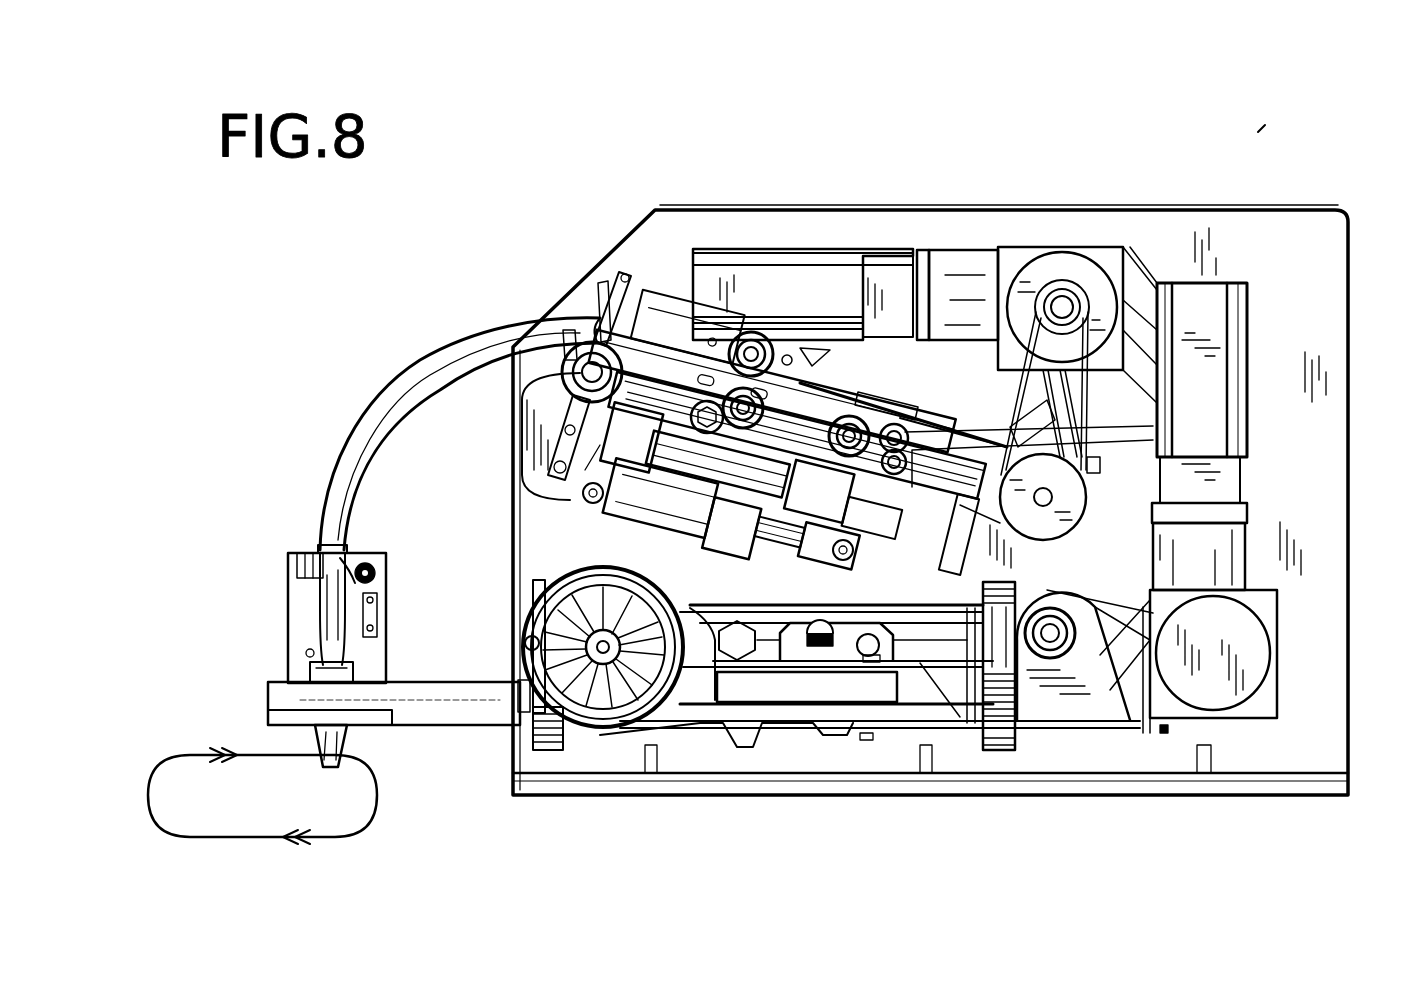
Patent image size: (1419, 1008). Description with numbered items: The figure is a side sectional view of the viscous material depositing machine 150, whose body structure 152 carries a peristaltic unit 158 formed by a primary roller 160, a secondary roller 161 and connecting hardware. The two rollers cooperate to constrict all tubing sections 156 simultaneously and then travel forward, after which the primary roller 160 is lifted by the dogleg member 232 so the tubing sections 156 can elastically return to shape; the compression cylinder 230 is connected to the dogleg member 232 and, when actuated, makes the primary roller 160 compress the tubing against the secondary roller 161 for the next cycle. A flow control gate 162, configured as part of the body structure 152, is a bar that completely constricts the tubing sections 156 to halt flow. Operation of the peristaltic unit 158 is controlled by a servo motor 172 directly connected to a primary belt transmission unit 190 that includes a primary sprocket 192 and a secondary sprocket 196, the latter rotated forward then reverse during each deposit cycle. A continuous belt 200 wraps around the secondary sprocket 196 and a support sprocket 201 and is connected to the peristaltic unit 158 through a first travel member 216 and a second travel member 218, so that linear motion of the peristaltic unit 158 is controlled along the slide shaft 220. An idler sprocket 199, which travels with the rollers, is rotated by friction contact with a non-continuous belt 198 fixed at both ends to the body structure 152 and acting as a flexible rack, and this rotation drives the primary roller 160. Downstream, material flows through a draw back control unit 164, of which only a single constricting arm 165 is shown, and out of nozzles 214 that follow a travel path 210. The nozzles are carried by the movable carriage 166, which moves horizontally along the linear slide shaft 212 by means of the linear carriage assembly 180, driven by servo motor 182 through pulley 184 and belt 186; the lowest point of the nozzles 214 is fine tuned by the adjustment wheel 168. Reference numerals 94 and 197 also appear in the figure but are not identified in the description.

The shaft 94 is at (1052, 500).
The viscous material depositing machine 150 is at (1250, 138).
The body structure 152 is at (1297, 206).
The tubing sections 156 is at (395, 382).
The peristaltic unit 158 is at (760, 312).
The primary roller 160 is at (745, 345).
The secondary roller 161 is at (708, 505).
The flow control gate 162 is at (588, 316).
The draw back control unit 164 is at (307, 548).
The constricting arm 165 is at (348, 555).
The movable carriage 166 is at (432, 683).
The adjustment wheel 168 is at (590, 700).
The servo motor 172 is at (950, 244).
The linear carriage assembly 180 is at (1068, 740).
The servo motor 182 is at (1247, 424).
The pulley 184 is at (1055, 655).
The belt 186 is at (900, 647).
The primary belt transmission unit 190 is at (1074, 244).
The primary sprocket 192 is at (1083, 300).
The secondary sprocket 196 is at (1046, 530).
The belt 197 is at (1048, 527).
The belt 198 is at (915, 412).
The idler sprocket 199 is at (903, 395).
The belt 200 is at (890, 525).
The support sprocket 201 is at (567, 372).
The travel path 210 is at (190, 755).
The linear slide shaft 212 is at (790, 690).
The nozzles 214 is at (350, 740).
The first travel member 216 is at (600, 447).
The second travel member 218 is at (803, 515).
The slide shaft 220 is at (925, 525).
The compression cylinder 230 is at (618, 517).
The dogleg member 232 is at (792, 366).